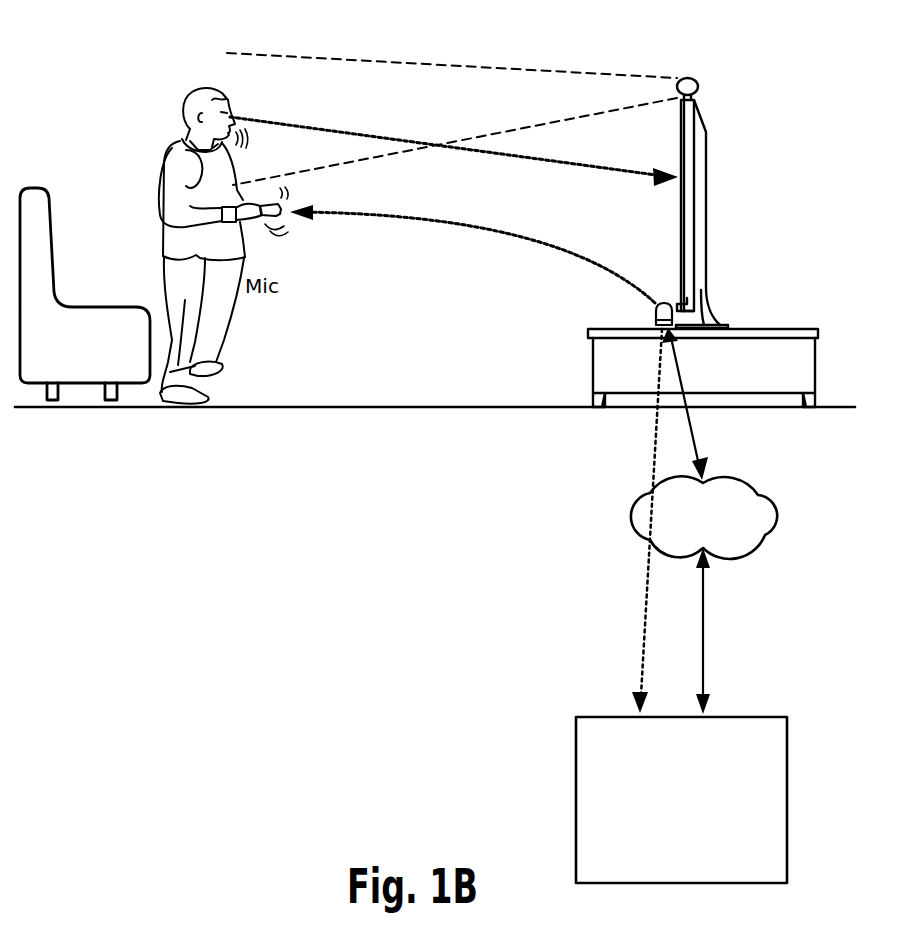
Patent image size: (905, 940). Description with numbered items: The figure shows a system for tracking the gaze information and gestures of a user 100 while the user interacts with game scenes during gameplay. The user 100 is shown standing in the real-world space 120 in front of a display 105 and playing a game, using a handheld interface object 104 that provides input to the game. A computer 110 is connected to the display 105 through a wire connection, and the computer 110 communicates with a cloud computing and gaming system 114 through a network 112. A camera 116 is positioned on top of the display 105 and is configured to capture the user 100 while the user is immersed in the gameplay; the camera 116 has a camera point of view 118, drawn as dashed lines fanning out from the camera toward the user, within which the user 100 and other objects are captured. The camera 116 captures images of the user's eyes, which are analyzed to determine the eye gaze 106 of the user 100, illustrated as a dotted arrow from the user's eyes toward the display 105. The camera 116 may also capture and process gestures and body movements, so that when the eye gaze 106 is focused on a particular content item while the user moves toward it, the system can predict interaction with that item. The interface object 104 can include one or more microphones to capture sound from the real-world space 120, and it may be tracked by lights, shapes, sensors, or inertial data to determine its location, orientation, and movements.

The user 100 is at (166, 158).
The interface object 104 is at (290, 204).
The display 105 is at (705, 217).
The eye gaze 106 is at (263, 122).
The computer 110 is at (655, 312).
The network 112 is at (622, 517).
The cloud computing and gaming system 114 is at (576, 790).
The camera 116 is at (698, 88).
The camera point of view 118 is at (584, 71).
The real-world space 120 is at (392, 380).